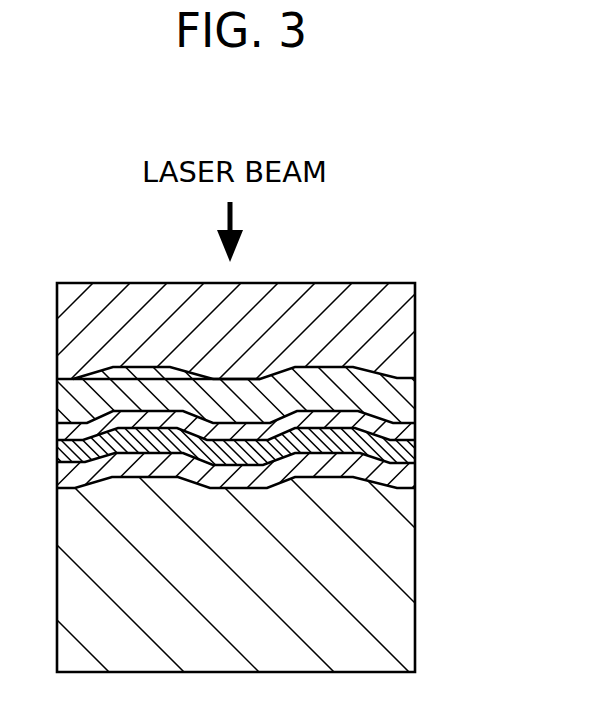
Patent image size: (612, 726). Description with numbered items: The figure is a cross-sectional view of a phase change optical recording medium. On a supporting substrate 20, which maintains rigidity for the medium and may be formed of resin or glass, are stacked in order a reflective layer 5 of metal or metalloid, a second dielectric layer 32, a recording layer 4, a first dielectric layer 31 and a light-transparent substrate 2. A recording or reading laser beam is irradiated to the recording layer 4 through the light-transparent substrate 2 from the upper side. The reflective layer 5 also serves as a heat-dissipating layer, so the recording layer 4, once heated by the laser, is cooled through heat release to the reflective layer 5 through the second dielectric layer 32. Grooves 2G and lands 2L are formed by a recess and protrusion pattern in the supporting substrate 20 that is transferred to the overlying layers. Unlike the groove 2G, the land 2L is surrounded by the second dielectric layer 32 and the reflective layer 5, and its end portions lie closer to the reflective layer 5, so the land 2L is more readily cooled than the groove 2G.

The light-transparent substrate 2 is at (410, 322).
The groove 2G is at (160, 368).
The land 2L is at (237, 378).
The first dielectric layer 31 is at (415, 395).
The recording layer 4 is at (415, 430).
The second dielectric layer 32 is at (415, 455).
The reflective layer 5 is at (415, 472).
The supporting substrate 20 is at (415, 523).